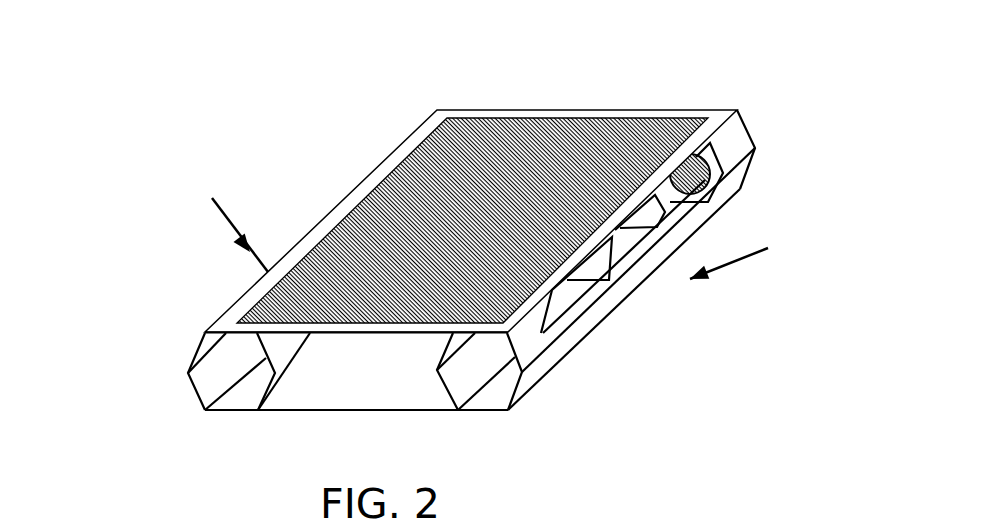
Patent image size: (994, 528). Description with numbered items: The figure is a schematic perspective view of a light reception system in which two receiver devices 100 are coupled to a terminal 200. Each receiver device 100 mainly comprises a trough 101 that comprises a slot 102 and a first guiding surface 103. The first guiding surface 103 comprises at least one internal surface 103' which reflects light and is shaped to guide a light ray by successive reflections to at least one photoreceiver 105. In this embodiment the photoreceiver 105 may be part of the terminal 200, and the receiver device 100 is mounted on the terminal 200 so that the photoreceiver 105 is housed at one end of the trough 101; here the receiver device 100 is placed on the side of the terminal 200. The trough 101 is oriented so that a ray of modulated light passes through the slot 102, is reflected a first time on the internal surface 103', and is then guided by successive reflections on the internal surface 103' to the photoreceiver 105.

The receiver device 100 is at (175, 397).
The trough 101 is at (186, 411).
The slot 102 is at (188, 352).
The first guiding surface 103 is at (559, 359).
The internal surface 103' is at (621, 284).
The photoreceiver 105 is at (684, 185).
The terminal 200 is at (570, 112).